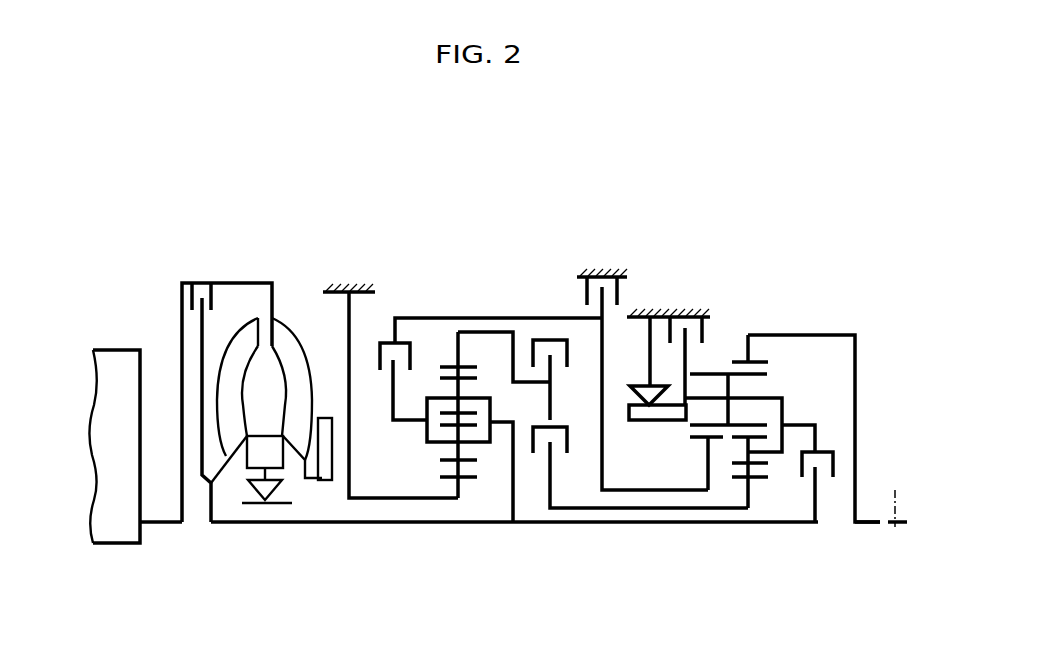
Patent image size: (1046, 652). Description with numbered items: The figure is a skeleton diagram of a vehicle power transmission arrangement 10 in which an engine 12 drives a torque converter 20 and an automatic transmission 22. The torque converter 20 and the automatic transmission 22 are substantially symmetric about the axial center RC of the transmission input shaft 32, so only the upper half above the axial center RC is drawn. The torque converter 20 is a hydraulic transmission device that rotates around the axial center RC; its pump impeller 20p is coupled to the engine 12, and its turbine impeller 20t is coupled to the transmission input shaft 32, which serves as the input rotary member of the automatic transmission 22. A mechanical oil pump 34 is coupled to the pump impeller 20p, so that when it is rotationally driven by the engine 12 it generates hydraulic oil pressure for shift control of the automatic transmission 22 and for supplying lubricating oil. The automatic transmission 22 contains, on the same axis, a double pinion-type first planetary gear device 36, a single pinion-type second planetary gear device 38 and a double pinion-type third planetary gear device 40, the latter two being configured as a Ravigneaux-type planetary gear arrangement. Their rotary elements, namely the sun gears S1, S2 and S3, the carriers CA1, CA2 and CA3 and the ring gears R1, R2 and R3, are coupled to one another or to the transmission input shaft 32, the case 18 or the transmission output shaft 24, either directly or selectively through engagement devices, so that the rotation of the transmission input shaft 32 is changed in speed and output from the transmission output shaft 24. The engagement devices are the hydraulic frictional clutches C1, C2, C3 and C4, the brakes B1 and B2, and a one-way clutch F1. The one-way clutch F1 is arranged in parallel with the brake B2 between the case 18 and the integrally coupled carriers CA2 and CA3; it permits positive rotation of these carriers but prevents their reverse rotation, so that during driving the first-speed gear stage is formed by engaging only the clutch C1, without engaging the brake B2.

The vehicle power transmission device 10 is at (266, 152).
The engine 12 is at (112, 358).
The case 18 is at (344, 287).
The torque converter 20 is at (278, 250).
The turbine impeller 20t is at (238, 366).
The pump impeller 20p is at (293, 363).
The automatic transmission 22 is at (462, 250).
The transmission output shaft 24 is at (862, 523).
The transmission input shaft 32 is at (270, 523).
The mechanical oil pump 34 is at (325, 428).
The first planetary gear device 36 is at (457, 555).
The second planetary gear device 38 is at (703, 555).
The third planetary gear device 40 is at (749, 555).
The brake B1 is at (584, 292).
The brake B2 is at (703, 328).
The clutch C1 is at (565, 442).
The clutch C2 is at (832, 462).
The clutch C3 is at (565, 358).
The clutch C4 is at (380, 352).
The carrier CA1 is at (423, 432).
The carrier CA2 is at (761, 395).
The carrier CA3 is at (782, 415).
The one-way clutch F1 is at (654, 368).
The ring gear R1 is at (466, 356).
The ring gear R2 is at (750, 348).
The ring gear R3 is at (740, 360).
The axial center RC is at (892, 494).
The sun gear S1 is at (467, 475).
The sun gear S2 is at (707, 440).
The sun gear S3 is at (756, 478).